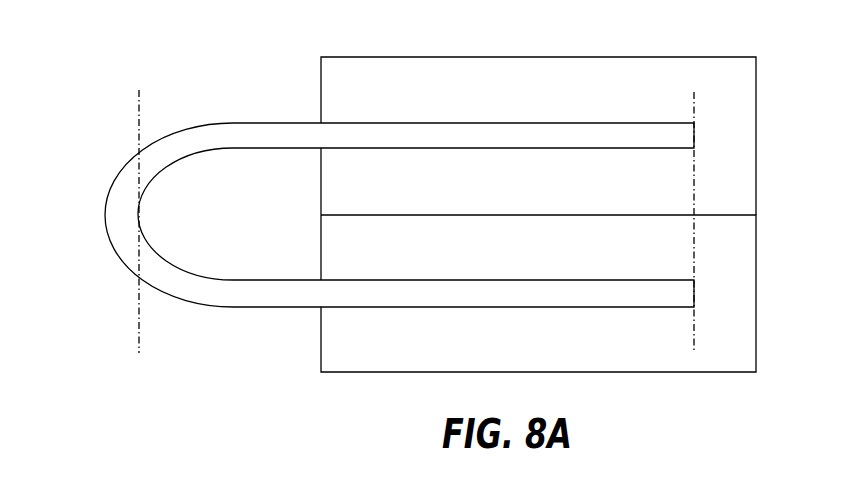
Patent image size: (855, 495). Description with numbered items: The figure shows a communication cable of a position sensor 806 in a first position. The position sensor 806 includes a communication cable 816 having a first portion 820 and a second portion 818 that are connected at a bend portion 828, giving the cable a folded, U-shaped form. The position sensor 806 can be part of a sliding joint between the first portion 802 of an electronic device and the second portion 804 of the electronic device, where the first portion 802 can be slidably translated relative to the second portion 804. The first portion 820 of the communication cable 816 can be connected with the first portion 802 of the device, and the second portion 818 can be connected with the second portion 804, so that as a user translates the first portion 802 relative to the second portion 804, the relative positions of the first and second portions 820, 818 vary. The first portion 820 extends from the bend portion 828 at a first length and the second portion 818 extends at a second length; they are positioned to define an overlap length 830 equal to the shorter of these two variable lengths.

The first portion of the electronic device 802 is at (648, 78).
The second portion of the electronic device 804 is at (635, 362).
The position sensor 806 is at (110, 150).
The communication cable 816 is at (262, 128).
The second portion of the communication cable 818 is at (597, 288).
The first portion of the communication cable 820 is at (597, 128).
The bend portion 828 is at (104, 243).
The overlap length 830 is at (694, 344).